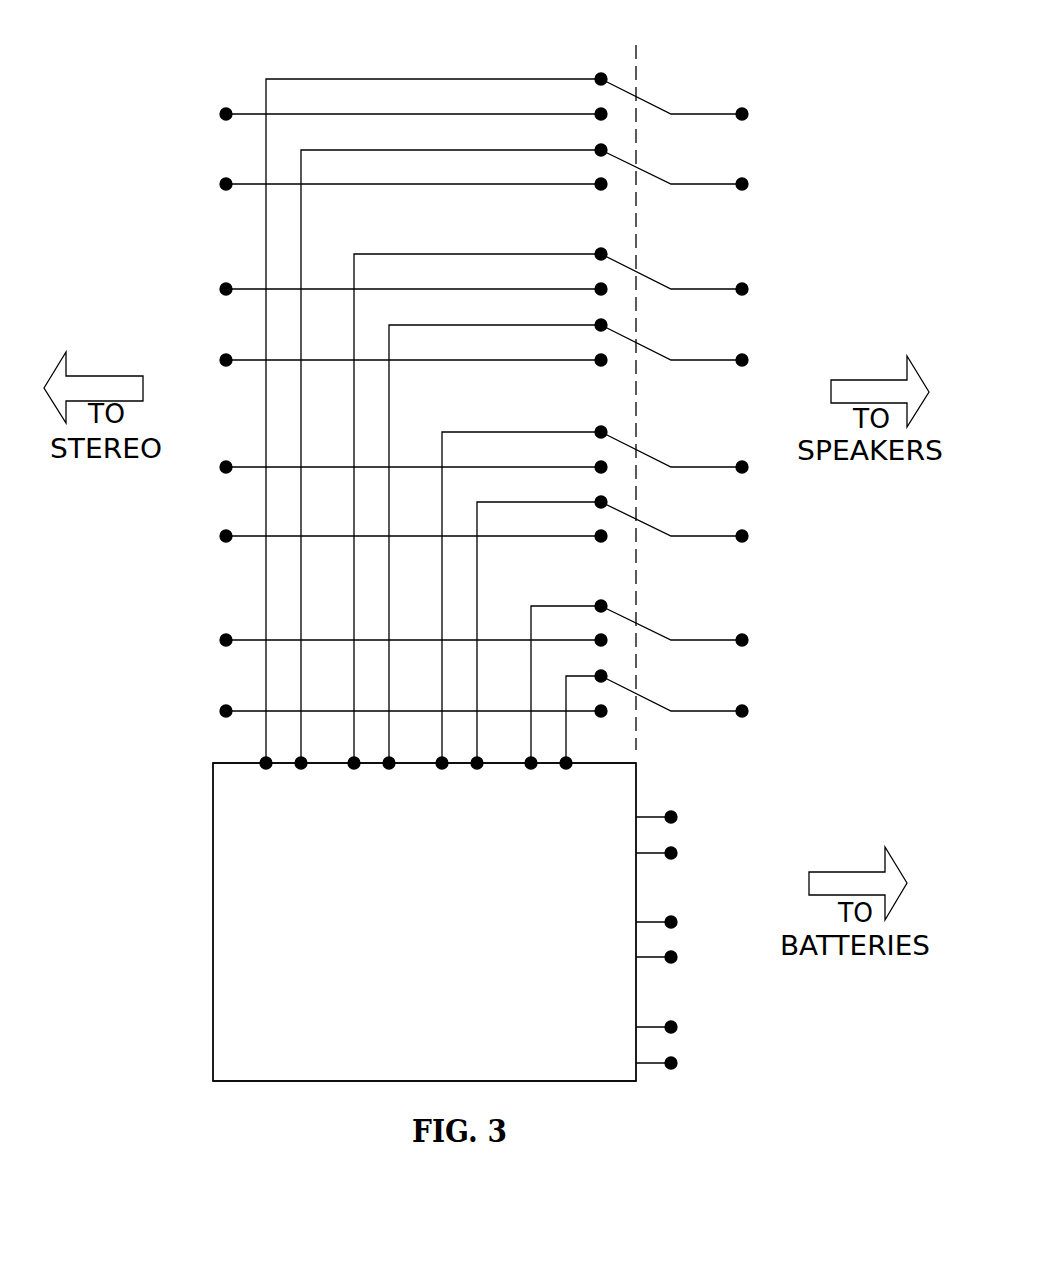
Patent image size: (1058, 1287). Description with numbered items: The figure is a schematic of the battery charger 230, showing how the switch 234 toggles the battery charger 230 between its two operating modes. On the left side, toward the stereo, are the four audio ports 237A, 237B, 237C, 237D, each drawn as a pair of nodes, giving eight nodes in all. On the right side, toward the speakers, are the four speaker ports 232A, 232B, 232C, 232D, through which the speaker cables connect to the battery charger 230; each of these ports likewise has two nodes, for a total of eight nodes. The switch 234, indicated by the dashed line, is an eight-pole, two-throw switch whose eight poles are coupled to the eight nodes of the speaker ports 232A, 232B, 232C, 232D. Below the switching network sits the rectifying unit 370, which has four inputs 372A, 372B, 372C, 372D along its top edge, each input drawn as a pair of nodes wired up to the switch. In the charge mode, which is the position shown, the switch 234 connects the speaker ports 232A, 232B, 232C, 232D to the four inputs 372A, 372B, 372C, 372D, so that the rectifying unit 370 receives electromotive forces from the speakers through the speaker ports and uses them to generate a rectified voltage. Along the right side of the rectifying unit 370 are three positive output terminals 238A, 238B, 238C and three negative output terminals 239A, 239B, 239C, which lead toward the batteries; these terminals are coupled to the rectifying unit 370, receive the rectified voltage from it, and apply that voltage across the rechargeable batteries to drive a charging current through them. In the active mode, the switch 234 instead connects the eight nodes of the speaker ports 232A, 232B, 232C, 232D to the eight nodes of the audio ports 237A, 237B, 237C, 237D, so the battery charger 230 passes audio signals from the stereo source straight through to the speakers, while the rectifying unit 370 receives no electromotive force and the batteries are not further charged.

The battery charger 230 is at (278, 56).
The switch 234 is at (640, 80).
The audio port 237A is at (197, 109).
The audio port 237B is at (197, 284).
The audio port 237C is at (197, 462).
The audio port 237D is at (197, 635).
The speaker port 232A is at (778, 110).
The speaker port 232B is at (778, 285).
The speaker port 232C is at (778, 463).
The speaker port 232D is at (778, 636).
The rectifying unit 370 is at (213, 904).
The input 372A is at (310, 780).
The input 372B is at (398, 780).
The input 372C is at (486, 780).
The input 372D is at (575, 780).
The positive output terminal 238A is at (695, 817).
The negative output terminal 239A is at (695, 853).
The positive output terminal 238B is at (695, 922).
The negative output terminal 239B is at (695, 957).
The positive output terminal 238C is at (695, 1027).
The negative output terminal 239C is at (695, 1063).